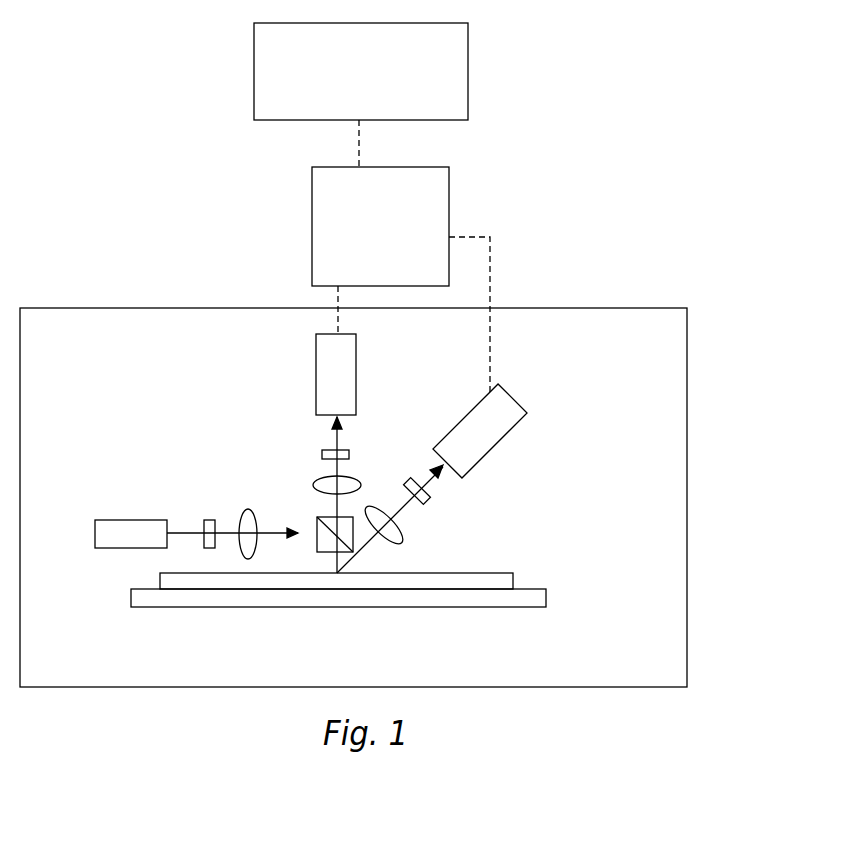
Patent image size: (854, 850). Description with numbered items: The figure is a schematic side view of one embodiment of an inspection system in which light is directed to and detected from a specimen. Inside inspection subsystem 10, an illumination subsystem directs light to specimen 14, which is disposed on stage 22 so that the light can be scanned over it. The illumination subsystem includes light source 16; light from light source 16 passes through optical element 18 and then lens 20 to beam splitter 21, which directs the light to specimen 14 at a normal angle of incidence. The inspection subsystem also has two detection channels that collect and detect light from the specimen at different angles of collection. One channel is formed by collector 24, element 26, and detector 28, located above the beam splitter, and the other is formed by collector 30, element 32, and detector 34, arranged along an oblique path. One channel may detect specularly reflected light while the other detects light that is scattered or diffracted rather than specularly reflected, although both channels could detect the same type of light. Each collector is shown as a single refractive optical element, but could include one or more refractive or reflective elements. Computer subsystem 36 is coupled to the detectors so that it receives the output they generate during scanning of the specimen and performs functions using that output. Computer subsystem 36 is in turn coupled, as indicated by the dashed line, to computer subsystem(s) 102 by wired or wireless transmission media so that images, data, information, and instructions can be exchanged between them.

The inspection subsystem 10 is at (687, 327).
The specimen 14 is at (160, 580).
The light source 16 is at (100, 520).
The optical element 18 is at (210, 520).
The lens 20 is at (245, 511).
The beam splitter 21 is at (330, 523).
The stage 22 is at (131, 603).
The collector 24 is at (316, 483).
The element 26 is at (322, 450).
The detector 28 is at (316, 378).
The collector 30 is at (402, 538).
The element 32 is at (428, 501).
The detector 34 is at (510, 432).
The computer subsystem 36 is at (368, 265).
The computer subsystem(s) 102 is at (343, 110).